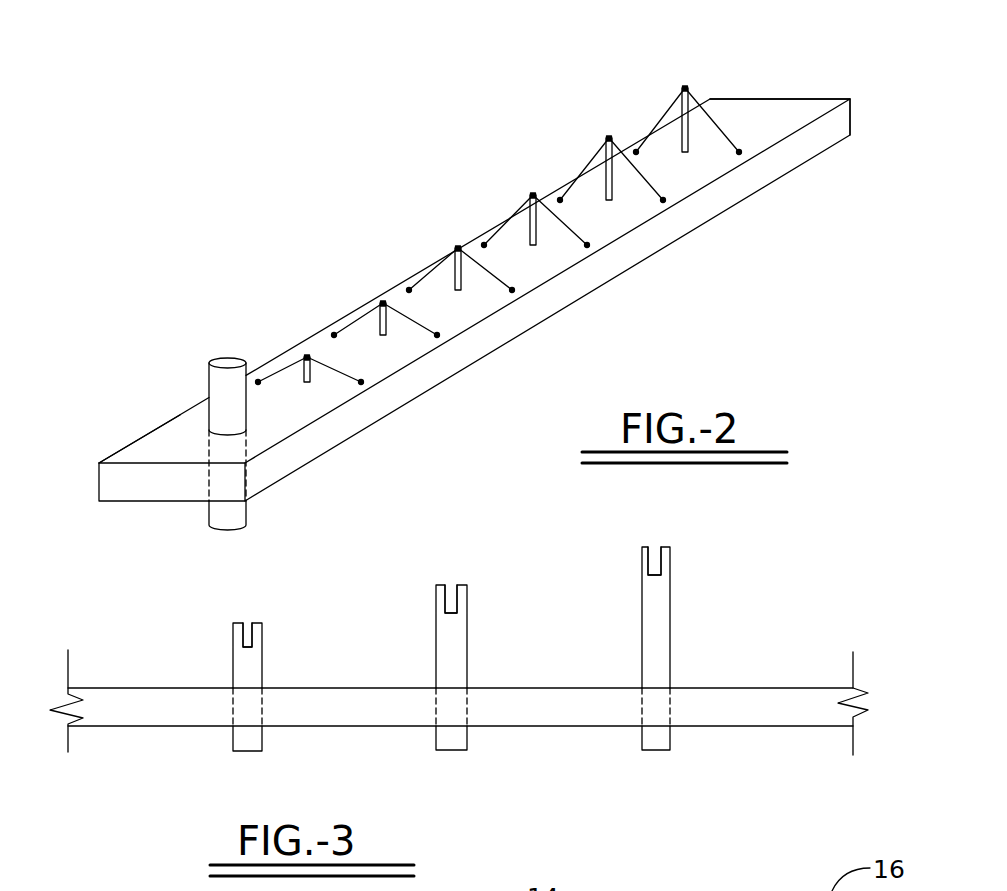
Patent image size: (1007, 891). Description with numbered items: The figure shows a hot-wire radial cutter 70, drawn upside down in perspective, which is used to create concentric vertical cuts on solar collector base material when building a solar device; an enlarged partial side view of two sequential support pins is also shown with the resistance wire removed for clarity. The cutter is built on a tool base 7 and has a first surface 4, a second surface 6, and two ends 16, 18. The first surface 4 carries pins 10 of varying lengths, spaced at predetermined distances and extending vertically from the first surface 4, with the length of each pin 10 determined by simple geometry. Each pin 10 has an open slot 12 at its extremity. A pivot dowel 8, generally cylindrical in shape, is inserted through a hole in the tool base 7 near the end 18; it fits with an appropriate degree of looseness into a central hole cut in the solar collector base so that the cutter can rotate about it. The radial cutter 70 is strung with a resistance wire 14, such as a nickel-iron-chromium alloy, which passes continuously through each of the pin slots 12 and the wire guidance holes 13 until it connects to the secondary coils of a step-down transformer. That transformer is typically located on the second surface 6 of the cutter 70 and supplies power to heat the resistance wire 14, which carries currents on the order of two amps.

In FIG. 2, the hot-wire radial cutter 70 is at (286, 198).
In FIG. 2, the first surface 4 is at (567, 258).
In FIG. 3, the first surface 4 is at (560, 688).
In FIG. 2, the second surface 6 is at (168, 502).
In FIG. 3, the second surface 6 is at (560, 727).
In FIG. 2, the tool base 7 is at (732, 185).
In FIG. 3, the tool base 7 is at (818, 705).
In FIG. 2, the pivot dowel 8 is at (225, 400).
In FIG. 2, the pins 10 is at (440, 267).
In FIG. 3, the pins 10 is at (653, 642).
In FIG. 3, the open slot 12 is at (248, 618).
In FIG. 2, the wire guidance holes 13 is at (490, 245).
In FIG. 2, the resistance wire 14 is at (583, 170).
In FIG. 2, the end 16 is at (773, 115).
In FIG. 2, the end 18 is at (175, 455).